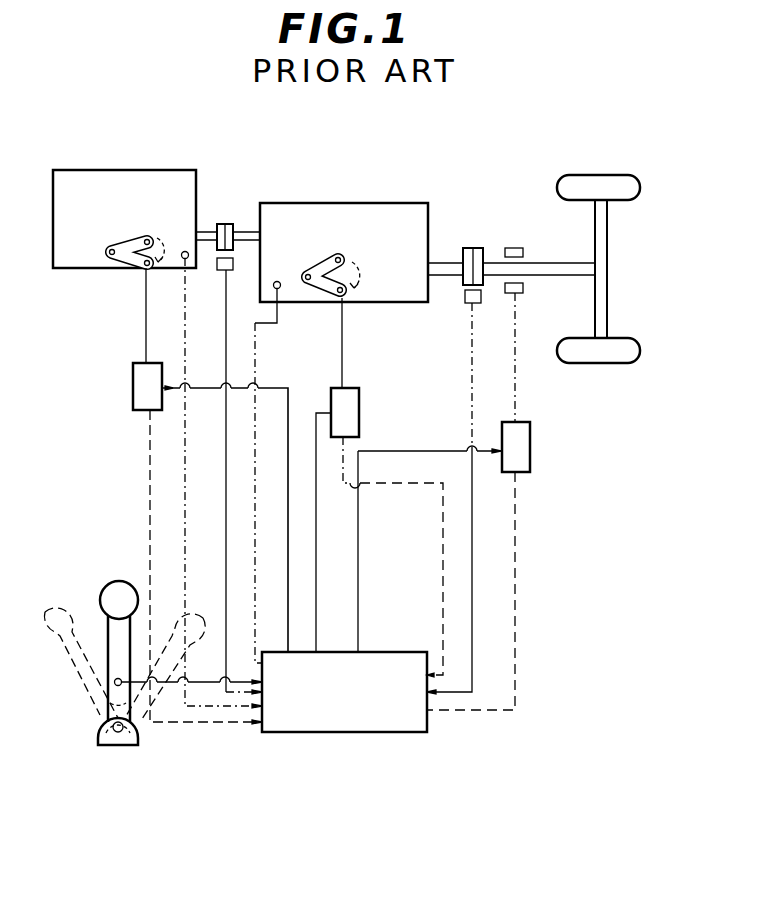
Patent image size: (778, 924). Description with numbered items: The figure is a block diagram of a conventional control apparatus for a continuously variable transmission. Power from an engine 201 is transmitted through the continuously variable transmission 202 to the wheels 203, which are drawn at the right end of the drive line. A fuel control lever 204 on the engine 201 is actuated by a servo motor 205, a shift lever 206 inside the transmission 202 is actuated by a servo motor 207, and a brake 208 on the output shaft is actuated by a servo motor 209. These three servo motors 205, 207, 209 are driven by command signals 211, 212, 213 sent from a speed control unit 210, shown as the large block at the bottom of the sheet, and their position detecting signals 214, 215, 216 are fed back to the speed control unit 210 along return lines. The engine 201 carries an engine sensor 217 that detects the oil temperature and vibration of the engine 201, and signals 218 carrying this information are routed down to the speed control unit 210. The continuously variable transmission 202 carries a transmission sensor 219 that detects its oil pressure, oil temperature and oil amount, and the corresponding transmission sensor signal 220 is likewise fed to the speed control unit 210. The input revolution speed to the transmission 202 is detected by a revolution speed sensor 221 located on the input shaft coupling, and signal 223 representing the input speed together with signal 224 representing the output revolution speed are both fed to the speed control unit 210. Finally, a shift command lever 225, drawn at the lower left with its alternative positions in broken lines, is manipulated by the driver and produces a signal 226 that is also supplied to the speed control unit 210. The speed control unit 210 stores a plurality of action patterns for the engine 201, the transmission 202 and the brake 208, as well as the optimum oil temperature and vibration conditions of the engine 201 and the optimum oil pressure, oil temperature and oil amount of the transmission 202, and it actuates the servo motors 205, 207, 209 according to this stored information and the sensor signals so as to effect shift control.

The engine 201 is at (90, 170).
The continuously variable transmission 202 is at (398, 203).
The wheels 203 is at (640, 192).
The fuel control lever 204 is at (136, 270).
The servo motor 205 is at (133, 378).
The shift lever 206 is at (327, 297).
The servo motor 207 is at (331, 393).
The brake 208 is at (514, 248).
The servo motor 209 is at (530, 451).
The speed control unit 210 is at (417, 725).
The command signal 211 is at (287, 543).
The command signal 212 is at (316, 578).
The command signal 213 is at (358, 620).
The position detecting signal 214 is at (152, 531).
The position detecting signal 215 is at (358, 486).
The position detecting signal 216 is at (516, 654).
The engine sensor 217 is at (184, 251).
The signals 218 is at (185, 495).
The transmission sensor 219 is at (277, 281).
The gear position signal line 220 is at (226, 512).
The revolution speed sensor 221 is at (232, 270).
The signal 223 is at (226, 433).
The signal 224 is at (468, 413).
The shift command lever 225 is at (103, 715).
The signal 226 is at (195, 690).